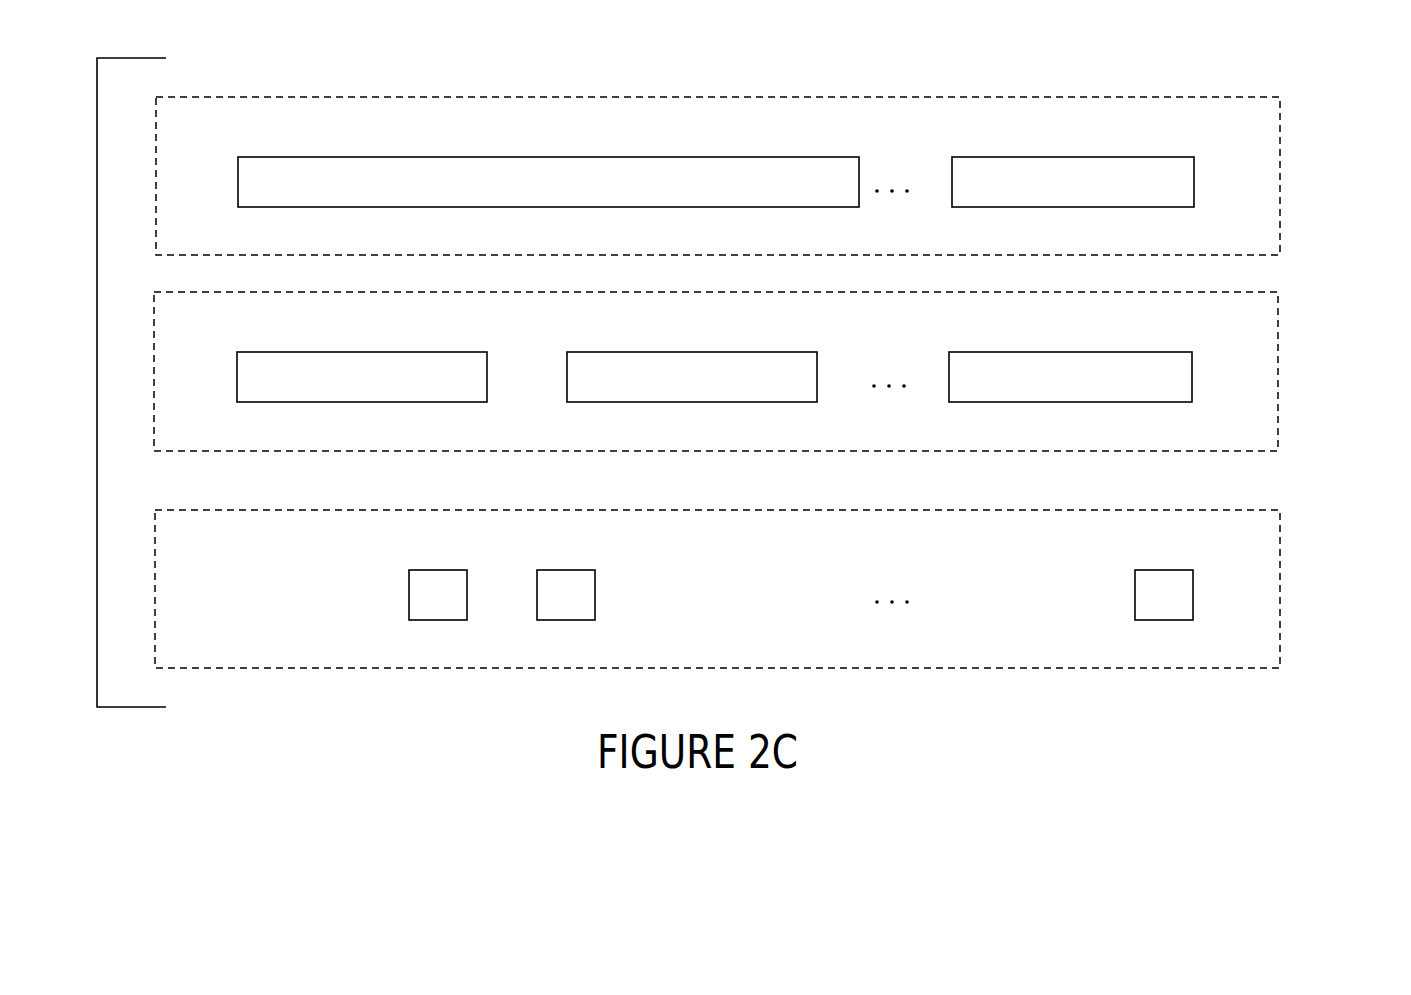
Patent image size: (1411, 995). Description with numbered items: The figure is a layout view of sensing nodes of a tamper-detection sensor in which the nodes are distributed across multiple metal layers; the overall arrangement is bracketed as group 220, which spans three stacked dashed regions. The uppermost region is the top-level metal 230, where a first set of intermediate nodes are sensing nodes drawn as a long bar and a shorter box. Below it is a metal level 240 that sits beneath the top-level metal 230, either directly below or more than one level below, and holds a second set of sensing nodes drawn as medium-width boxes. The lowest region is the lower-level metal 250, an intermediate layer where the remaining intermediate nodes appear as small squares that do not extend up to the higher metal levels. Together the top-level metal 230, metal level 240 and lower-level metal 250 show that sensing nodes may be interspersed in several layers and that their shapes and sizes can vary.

The node set 220 is at (97, 330).
The top-level metal 230 is at (1280, 133).
The metal level 240 is at (1278, 330).
The lower-level metal 250 is at (1280, 548).